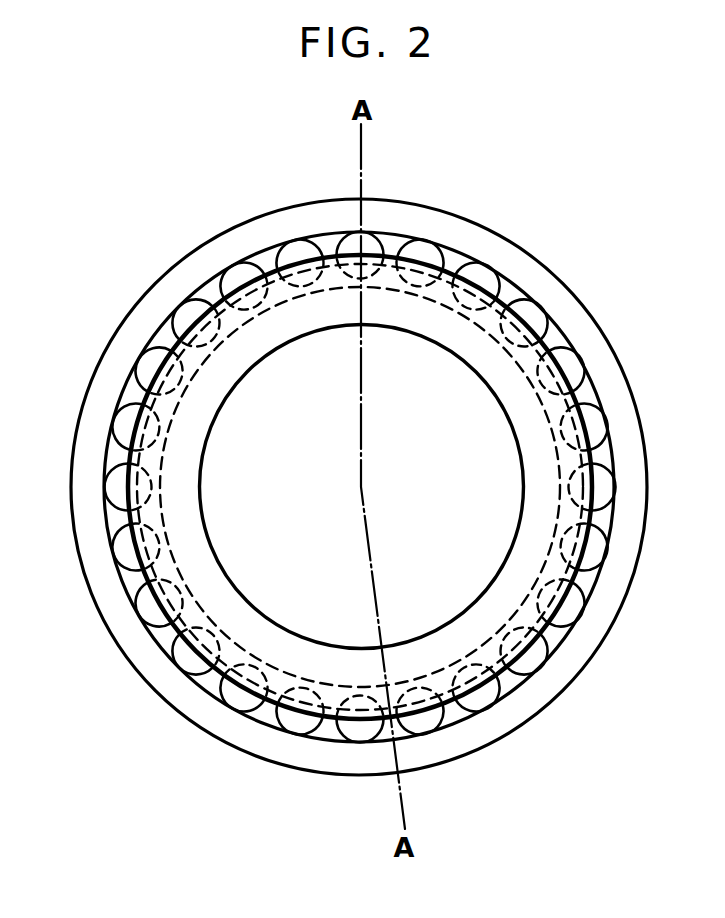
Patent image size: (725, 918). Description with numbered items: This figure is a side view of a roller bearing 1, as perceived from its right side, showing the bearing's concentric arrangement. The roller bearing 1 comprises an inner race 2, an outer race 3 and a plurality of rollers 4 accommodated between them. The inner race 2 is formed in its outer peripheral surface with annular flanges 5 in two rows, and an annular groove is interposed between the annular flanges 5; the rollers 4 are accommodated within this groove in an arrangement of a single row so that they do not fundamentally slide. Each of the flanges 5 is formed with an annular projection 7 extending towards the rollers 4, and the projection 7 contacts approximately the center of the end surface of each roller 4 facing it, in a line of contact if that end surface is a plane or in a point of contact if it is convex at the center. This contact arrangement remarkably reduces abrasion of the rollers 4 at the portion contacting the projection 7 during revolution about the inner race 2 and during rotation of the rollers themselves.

The roller bearing 1 is at (236, 190).
The inner race 2 is at (533, 430).
The outer race 3 is at (407, 215).
The rollers 4 is at (490, 265).
The annular flanges 5 is at (527, 360).
The annular projection 7 is at (572, 367).